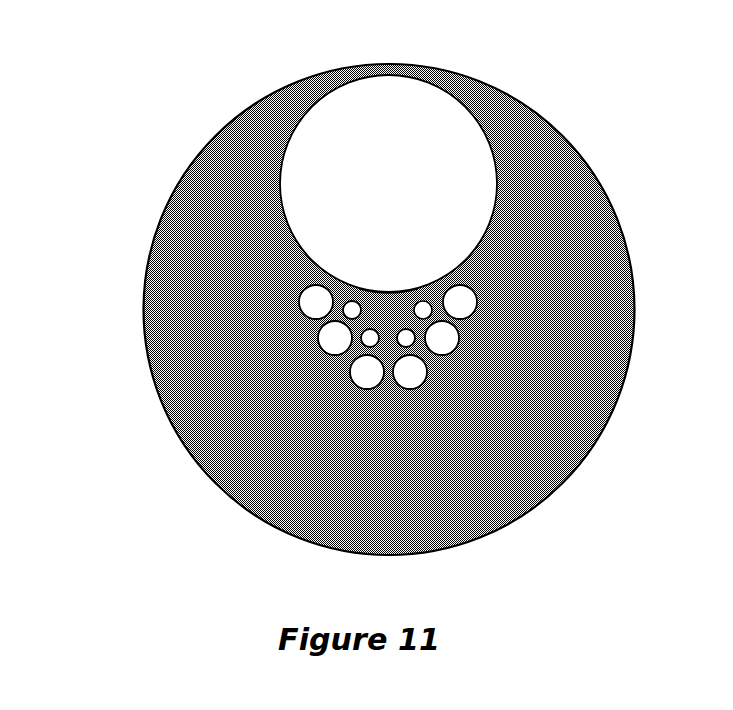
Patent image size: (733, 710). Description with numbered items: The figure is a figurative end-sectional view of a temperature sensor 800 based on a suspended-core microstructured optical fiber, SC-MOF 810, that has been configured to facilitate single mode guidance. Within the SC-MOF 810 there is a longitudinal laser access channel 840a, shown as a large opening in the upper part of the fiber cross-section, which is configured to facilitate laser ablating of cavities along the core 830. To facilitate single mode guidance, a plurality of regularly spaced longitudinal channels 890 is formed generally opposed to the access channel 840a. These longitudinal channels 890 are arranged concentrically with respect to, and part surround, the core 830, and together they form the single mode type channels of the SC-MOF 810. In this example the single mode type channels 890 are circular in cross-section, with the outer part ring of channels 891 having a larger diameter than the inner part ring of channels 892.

The temperature sensor 800 is at (360, 291).
The SC-MOF 810 is at (572, 146).
The longitudinal laser access channel 840a is at (388, 183).
The core 830 is at (392, 288).
The longitudinal channels 890 is at (309, 344).
The outer part ring of channels 891 is at (425, 314).
The inner part ring of channels 892 is at (411, 373).